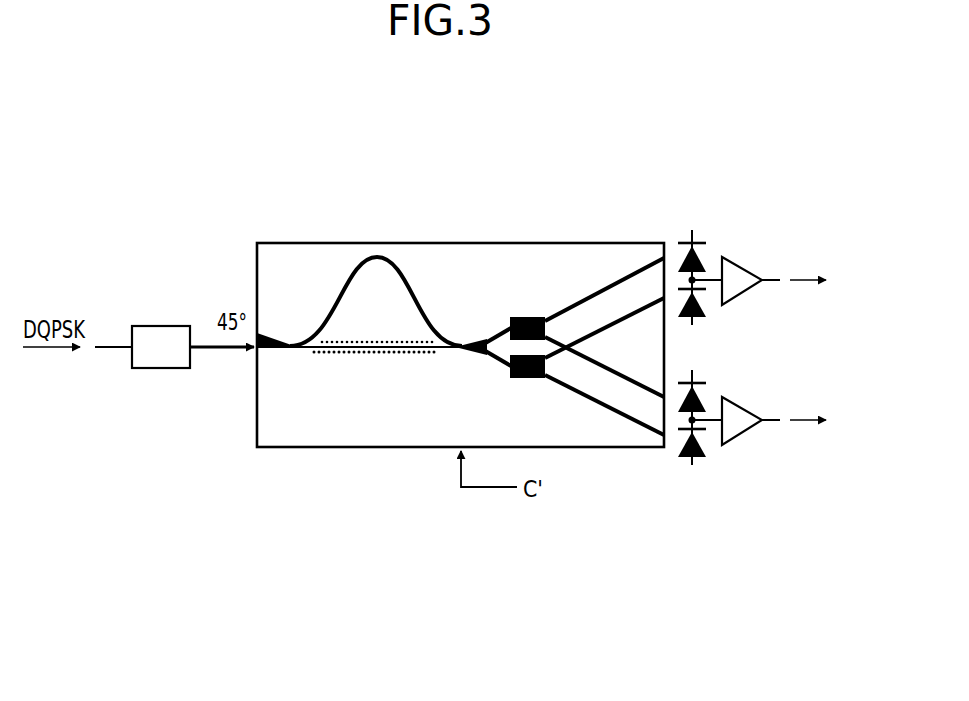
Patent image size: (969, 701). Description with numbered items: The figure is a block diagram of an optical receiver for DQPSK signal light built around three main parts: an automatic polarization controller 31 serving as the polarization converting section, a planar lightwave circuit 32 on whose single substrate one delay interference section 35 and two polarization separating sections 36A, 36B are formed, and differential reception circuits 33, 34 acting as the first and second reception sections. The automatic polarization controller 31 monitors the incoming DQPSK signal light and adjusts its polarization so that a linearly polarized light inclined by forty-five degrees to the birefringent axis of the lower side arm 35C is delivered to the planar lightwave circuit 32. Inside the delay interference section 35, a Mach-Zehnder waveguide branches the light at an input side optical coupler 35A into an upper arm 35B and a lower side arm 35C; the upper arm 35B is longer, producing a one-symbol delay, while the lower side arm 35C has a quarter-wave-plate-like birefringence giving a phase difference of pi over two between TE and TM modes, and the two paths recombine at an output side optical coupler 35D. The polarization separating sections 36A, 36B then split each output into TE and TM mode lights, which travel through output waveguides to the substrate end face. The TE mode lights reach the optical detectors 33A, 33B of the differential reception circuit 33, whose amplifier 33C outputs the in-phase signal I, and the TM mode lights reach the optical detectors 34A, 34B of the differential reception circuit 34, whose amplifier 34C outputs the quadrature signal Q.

The automatic polarization controller 31 is at (163, 326).
The planar lightwave circuit 32 is at (285, 243).
The differential reception circuit 33 is at (752, 272).
The optical detector 33A is at (701, 253).
The optical detector 33B is at (703, 313).
The amplifier 33C is at (747, 290).
The differential reception circuit 34 is at (752, 412).
The optical detector 34A is at (701, 393).
The optical detector 34B is at (703, 453).
The amplifier 34C is at (747, 430).
The delay interference section 35 is at (384, 349).
The input side optical coupler 35A is at (290, 343).
The arm 35B is at (347, 290).
The lower side arm 35C is at (413, 353).
The output side optical coupler 35D is at (460, 342).
The polarization separating section 36A is at (528, 317).
The polarization separating section 36B is at (525, 378).